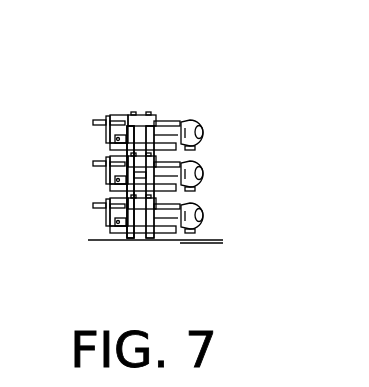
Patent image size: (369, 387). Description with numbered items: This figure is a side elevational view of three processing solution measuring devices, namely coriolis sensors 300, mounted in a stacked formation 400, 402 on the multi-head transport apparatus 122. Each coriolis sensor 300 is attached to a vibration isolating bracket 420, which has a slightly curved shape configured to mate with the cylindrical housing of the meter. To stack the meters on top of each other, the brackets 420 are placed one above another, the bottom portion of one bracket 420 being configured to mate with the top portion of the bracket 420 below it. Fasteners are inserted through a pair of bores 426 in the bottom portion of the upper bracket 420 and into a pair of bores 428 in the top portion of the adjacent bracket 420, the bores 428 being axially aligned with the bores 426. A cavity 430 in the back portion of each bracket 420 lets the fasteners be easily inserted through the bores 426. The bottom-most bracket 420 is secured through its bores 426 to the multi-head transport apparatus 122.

The fastening assembly 400 is at (123, 98).
The fastening assembly 402 is at (130, 182).
The vibration isolating bracket 420 is at (163, 113).
The bores 428 is at (238, 167).
The bores 426 is at (128, 151).
The cavity 430 is at (128, 212).
The coriolis sensor 300 is at (207, 135).
The multi-head transport apparatus 122 is at (180, 246).